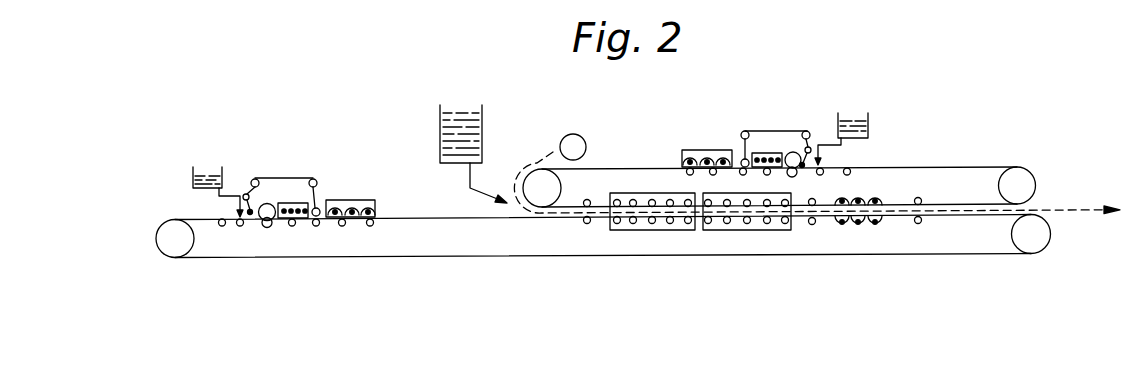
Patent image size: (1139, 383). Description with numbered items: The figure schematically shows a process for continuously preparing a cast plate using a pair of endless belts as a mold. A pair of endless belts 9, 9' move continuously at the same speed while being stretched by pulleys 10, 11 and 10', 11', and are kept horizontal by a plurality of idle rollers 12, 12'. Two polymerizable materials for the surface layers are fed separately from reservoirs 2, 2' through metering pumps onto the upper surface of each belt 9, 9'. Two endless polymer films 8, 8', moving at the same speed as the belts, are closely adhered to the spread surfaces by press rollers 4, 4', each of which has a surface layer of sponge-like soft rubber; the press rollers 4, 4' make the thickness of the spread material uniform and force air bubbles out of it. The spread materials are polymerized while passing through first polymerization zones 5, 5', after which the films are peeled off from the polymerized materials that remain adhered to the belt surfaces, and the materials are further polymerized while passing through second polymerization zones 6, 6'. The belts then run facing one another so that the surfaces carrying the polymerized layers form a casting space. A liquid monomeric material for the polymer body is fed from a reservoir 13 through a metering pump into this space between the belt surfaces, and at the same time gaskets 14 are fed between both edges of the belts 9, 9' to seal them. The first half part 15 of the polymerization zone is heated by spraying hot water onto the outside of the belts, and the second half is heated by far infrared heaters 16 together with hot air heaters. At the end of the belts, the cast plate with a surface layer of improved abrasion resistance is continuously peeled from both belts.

The reservoir 2 is at (841, 118).
The reservoir 2' is at (218, 174).
The press roller 4 is at (790, 136).
The press roller 4' is at (277, 247).
The first polymerization zone 5 is at (775, 131).
The first polymerization zone 5' is at (285, 178).
The second polymerization zone 6 is at (707, 139).
The second polymerization zone 6' is at (356, 189).
The endless polymer film 8 is at (811, 129).
The endless polymer film 8' is at (246, 177).
The endless belt 9 is at (779, 166).
The endless belt 9' is at (603, 254).
The pulley 10 is at (543, 230).
The pulley 10' is at (184, 254).
The pulley 11 is at (1033, 172).
The pulley 11' is at (1037, 254).
The idle rollers 12 is at (652, 200).
The idle rollers 12' is at (603, 255).
The reservoir 13 is at (460, 118).
The gaskets 14 is at (553, 150).
The first half part of the polymerization zone 15 is at (737, 222).
The far infrared heaters 16 is at (863, 197).